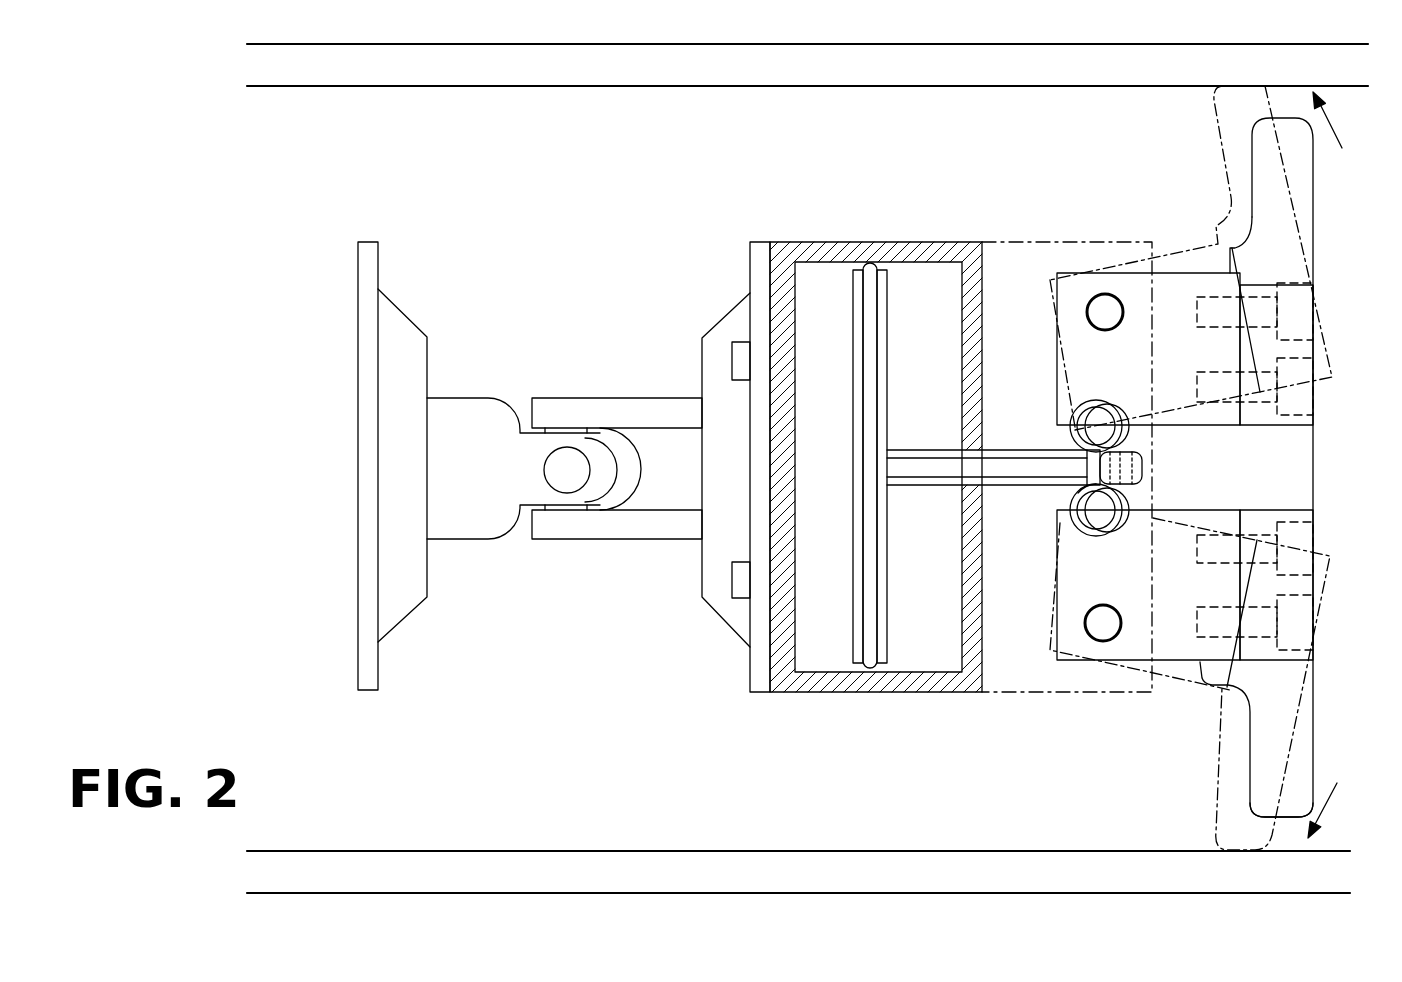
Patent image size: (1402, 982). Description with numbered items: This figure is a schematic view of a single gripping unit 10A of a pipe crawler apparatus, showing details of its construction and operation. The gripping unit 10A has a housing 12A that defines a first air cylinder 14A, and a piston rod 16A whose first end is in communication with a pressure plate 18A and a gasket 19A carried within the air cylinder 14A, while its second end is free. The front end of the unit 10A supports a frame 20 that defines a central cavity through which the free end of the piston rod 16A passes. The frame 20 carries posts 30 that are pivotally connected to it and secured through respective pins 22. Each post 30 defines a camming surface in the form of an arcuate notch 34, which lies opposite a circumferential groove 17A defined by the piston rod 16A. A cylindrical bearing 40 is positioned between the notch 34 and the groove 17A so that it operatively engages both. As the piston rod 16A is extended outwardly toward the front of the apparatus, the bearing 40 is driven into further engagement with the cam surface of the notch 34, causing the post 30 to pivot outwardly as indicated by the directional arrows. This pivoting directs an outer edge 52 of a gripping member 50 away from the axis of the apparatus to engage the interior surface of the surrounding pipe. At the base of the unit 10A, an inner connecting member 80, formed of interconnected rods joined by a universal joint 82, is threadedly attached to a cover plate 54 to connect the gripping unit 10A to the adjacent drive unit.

The gripping unit 10A is at (777, 242).
The housing 12A is at (808, 243).
The first air cylinder 14A is at (902, 268).
The piston rod 16A is at (942, 450).
The circumferential groove 17A is at (1137, 465).
The pressure plate 18A is at (848, 633).
The gasket 19A is at (890, 633).
The frame 20 is at (1013, 232).
The pin 22 is at (1086, 612).
The post 30 is at (1202, 664).
The arcuate notch 34 is at (1127, 400).
The cylindrical bearing 40 is at (1078, 493).
The gripping member 50 is at (1267, 740).
The outer edge 52 is at (1275, 820).
The cover plate 54 is at (403, 327).
The inner connecting member 80 is at (680, 385).
The universal joint 82 is at (567, 470).